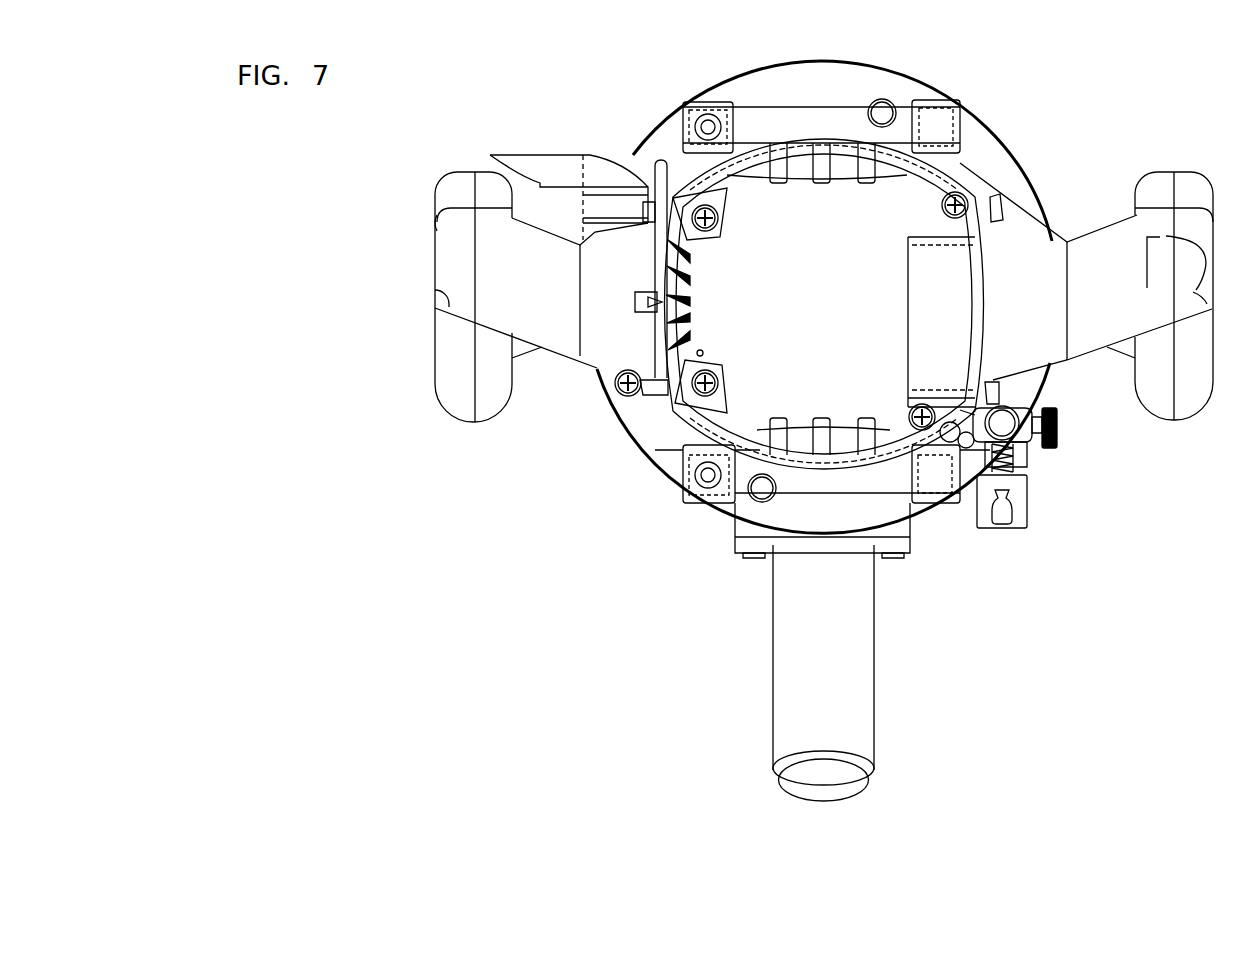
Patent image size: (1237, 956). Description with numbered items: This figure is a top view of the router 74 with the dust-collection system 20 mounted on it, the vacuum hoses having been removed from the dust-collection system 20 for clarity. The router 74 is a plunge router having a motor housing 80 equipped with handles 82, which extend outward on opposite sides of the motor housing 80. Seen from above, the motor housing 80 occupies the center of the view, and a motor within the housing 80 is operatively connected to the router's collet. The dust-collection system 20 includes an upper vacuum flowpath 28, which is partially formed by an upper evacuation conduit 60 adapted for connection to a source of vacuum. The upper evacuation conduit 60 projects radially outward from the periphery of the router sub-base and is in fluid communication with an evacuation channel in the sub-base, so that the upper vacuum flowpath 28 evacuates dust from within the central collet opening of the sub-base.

The router dust-collection system 20 is at (741, 583).
The upper vacuum flowpath 28 is at (818, 811).
The upper evacuation conduit 60 is at (877, 745).
The router 74 is at (950, 64).
The motor housing 80 is at (958, 172).
The handles 82 is at (447, 420).